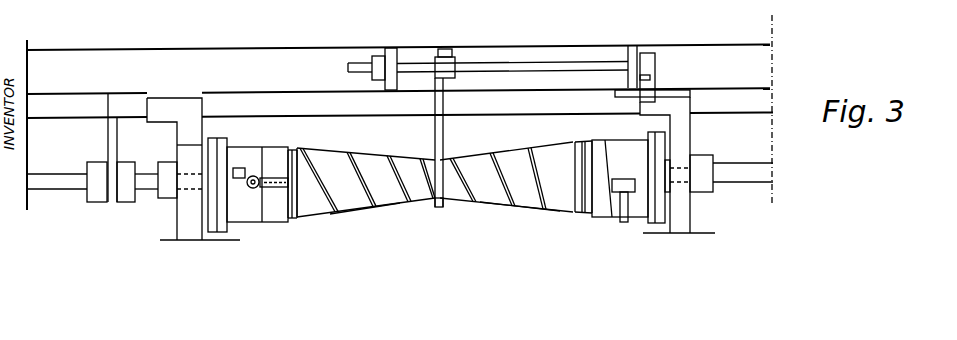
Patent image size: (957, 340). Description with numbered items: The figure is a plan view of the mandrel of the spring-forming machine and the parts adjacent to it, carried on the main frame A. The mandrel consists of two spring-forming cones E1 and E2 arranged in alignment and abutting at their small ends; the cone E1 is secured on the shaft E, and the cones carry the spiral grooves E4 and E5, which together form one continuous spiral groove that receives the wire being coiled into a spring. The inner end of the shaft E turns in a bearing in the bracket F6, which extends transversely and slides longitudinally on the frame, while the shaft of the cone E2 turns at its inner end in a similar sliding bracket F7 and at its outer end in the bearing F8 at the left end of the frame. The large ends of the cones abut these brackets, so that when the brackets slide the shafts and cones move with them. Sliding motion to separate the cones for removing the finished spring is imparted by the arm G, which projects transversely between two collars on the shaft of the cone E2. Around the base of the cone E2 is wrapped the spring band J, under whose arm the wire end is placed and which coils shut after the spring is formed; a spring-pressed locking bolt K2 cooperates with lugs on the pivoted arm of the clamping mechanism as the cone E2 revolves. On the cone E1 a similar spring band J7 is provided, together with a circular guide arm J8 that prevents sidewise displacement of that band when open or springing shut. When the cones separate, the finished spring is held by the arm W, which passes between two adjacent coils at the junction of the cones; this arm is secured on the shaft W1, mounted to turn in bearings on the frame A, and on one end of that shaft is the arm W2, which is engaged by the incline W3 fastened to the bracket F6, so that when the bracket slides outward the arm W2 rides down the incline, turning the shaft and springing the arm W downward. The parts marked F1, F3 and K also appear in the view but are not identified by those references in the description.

The main frame A is at (400, 125).
The shaft W1 is at (527, 62).
The arm W is at (452, 128).
The arm W2 is at (655, 80).
The incline W3 is at (700, 85).
The bracket F6 is at (677, 130).
The pedestal F1 is at (187, 137).
The arm G is at (108, 143).
The bearing F3 is at (60, 182).
The bracket F7 is at (99, 190).
The bearing F8 is at (123, 190).
The spring band J is at (272, 157).
The spring-pressed bolt K2 is at (257, 184).
The crank K is at (260, 174).
The spring-forming cone E2 is at (366, 173).
The spiral groove E5 is at (365, 217).
The spring-forming cone E1 is at (506, 169).
The spiral groove E4 is at (520, 215).
The spring band J7 is at (620, 123).
The circular guide arm J8 is at (616, 210).
The shaft E is at (745, 175).